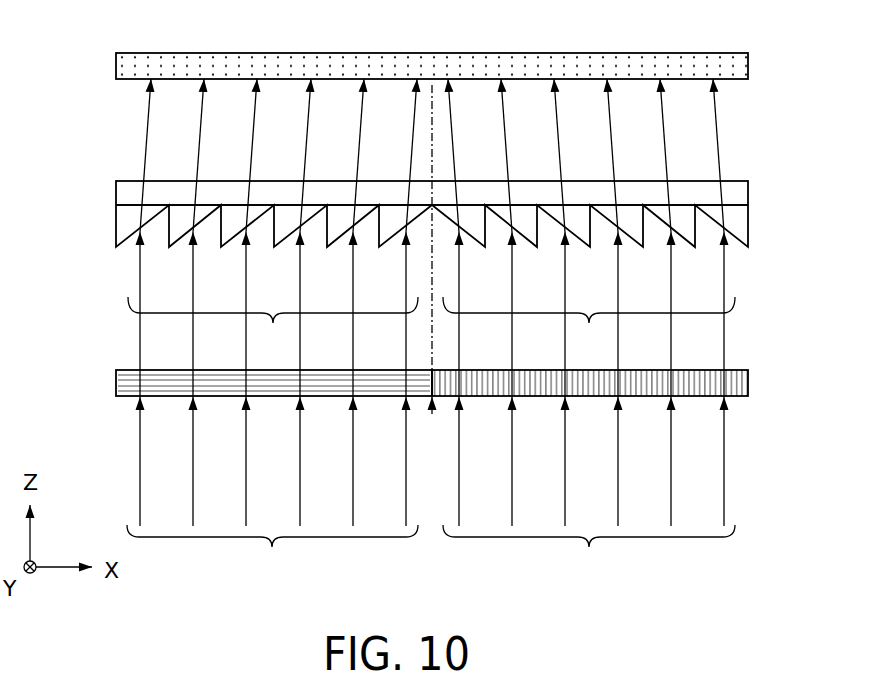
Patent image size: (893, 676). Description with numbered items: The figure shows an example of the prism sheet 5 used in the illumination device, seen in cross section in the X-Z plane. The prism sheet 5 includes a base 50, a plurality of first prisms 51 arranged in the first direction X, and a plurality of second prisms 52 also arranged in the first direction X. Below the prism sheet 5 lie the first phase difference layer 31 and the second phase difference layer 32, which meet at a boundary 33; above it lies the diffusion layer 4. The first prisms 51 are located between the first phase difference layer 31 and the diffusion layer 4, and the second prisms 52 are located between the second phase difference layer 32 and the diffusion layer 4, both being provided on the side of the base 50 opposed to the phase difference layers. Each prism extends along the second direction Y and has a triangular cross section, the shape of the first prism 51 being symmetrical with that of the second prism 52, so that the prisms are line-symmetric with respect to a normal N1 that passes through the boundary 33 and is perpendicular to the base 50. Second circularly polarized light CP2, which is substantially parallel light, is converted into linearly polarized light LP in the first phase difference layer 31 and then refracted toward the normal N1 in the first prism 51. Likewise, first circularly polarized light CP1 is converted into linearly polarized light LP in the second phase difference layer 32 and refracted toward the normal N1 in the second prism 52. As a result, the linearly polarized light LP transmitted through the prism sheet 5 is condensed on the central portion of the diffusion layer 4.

The diffusion layer 4 is at (118, 66).
The prism sheet 5 is at (430, 238).
The base 50 is at (740, 193).
The first prisms 51 is at (178, 240).
The second prisms 52 is at (684, 238).
The first phase difference layer 31 is at (118, 384).
The second phase difference layer 32 is at (745, 383).
The boundary 33 is at (432, 414).
The normal N1 is at (433, 122).
The linearly polarized light LP is at (431, 327).
The first circularly polarized light CP1 is at (589, 332).
The second circularly polarized light CP2 is at (272, 332).